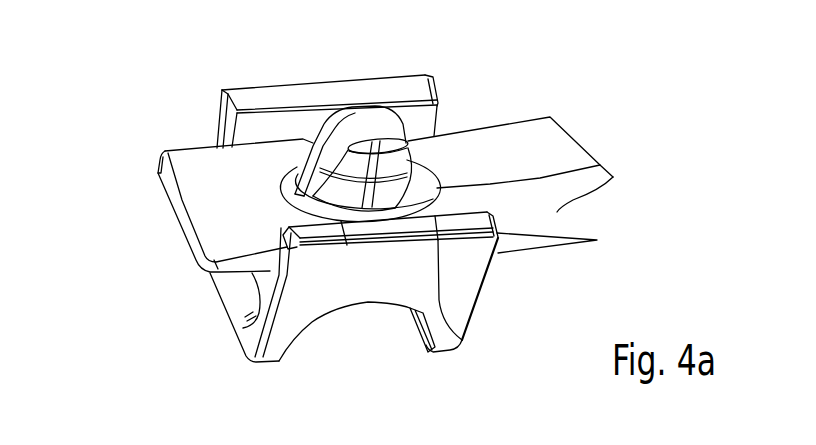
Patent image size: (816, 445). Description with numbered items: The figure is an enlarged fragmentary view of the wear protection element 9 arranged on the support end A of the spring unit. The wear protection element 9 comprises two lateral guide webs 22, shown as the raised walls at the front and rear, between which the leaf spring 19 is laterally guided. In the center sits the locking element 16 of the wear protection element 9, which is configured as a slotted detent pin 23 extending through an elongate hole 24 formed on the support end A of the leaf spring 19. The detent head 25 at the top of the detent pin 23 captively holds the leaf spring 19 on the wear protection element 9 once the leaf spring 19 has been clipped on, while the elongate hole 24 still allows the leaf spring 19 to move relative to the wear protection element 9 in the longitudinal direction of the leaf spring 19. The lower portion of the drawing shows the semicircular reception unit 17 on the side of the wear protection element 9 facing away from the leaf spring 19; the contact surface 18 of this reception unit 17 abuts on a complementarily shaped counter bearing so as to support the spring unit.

The wear protection element 9 is at (459, 303).
The locking element 16 is at (298, 157).
The reception unit 17 is at (334, 311).
The contact surface 18 is at (422, 329).
The leaf spring 19 is at (227, 231).
The lateral guide web 22 is at (268, 99).
The detent pin 23 is at (567, 187).
The elongate hole 24 is at (455, 333).
The detent head 25 is at (418, 146).
The support end A is at (157, 207).